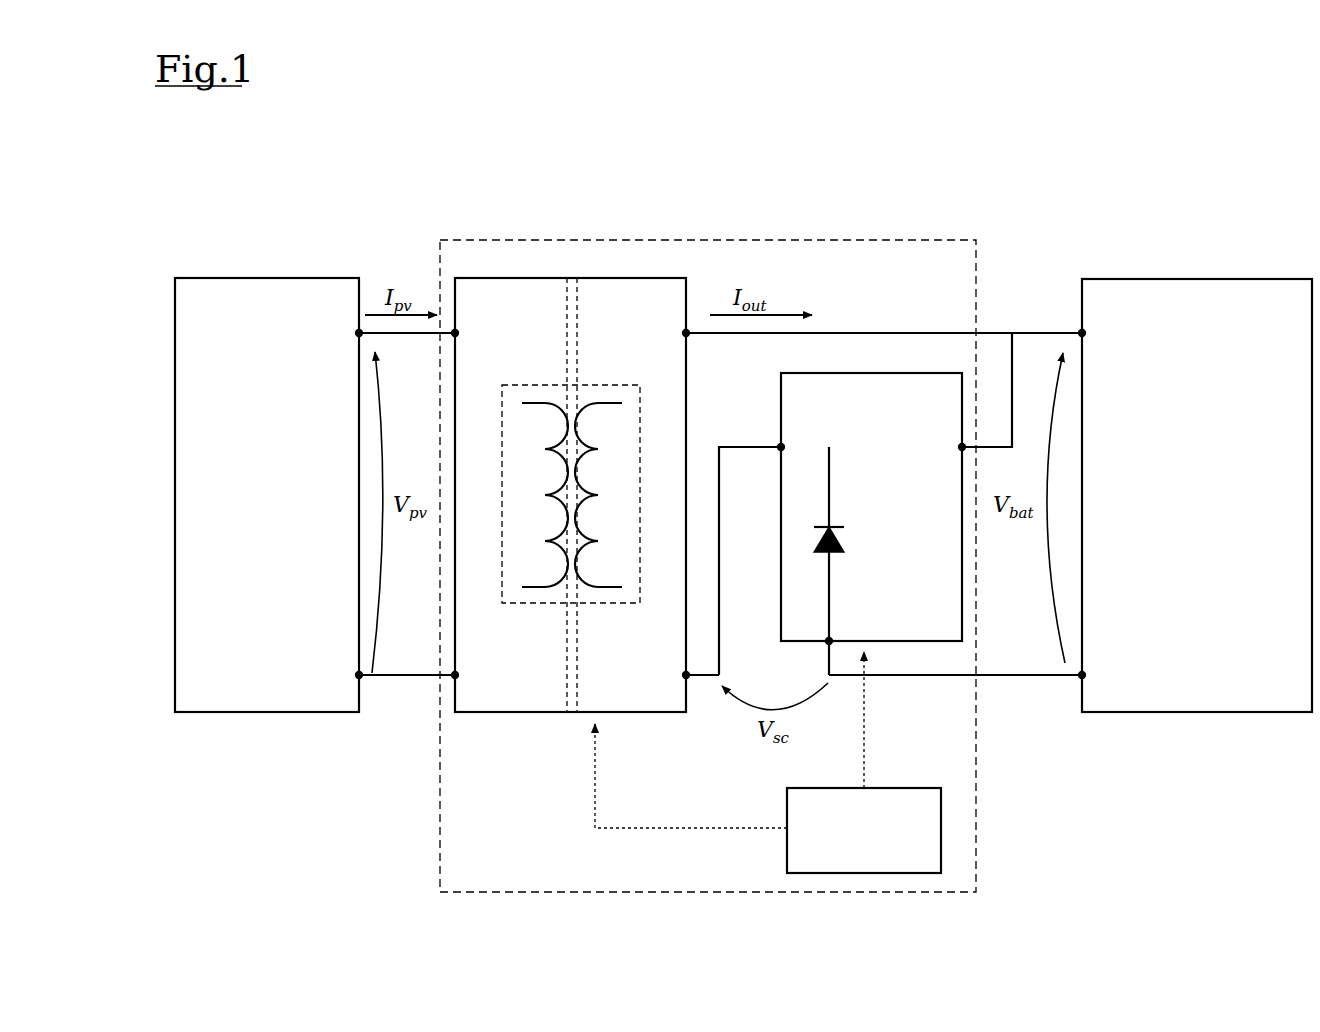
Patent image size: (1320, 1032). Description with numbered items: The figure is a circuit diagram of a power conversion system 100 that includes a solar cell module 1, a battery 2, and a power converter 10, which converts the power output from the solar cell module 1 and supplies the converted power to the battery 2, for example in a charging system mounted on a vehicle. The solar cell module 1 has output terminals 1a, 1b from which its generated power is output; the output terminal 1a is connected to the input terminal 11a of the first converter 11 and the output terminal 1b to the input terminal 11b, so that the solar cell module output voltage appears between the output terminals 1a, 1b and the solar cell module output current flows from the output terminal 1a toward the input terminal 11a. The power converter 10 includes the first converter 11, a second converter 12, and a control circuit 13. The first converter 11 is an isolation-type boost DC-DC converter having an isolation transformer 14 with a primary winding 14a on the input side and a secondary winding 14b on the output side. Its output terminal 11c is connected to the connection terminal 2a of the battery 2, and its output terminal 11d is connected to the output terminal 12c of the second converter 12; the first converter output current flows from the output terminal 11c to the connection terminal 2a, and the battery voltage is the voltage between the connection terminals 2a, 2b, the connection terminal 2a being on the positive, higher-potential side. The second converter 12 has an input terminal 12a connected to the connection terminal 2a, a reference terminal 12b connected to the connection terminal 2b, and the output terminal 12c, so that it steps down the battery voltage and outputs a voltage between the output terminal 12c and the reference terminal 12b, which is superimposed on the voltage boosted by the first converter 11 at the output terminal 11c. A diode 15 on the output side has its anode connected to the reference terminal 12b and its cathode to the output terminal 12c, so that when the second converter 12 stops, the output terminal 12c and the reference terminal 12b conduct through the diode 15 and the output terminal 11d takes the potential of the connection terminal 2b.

The power conversion system 100 is at (1162, 142).
The solar cell module 1 is at (260, 278).
The output terminal 1a is at (356, 333).
The output terminal 1b is at (356, 675).
The battery 2 is at (1226, 279).
The connection terminal 2a is at (1085, 333).
The connection terminal 2b is at (1085, 675).
The power converter 10 is at (784, 240).
The first converter 11 is at (597, 278).
The input terminal 11a is at (458, 333).
The input terminal 11b is at (458, 675).
The output terminal 11c is at (683, 333).
The output terminal 11d is at (683, 675).
The second converter 12 is at (866, 373).
The input terminal 12a is at (962, 447).
The reference terminal 12b is at (830, 641).
The output terminal 12c is at (781, 447).
The control circuit 13 is at (910, 788).
The isolation transformer 14 is at (618, 476).
The primary winding 14a is at (528, 403).
The secondary winding 14b is at (617, 403).
The diode 15 is at (836, 542).